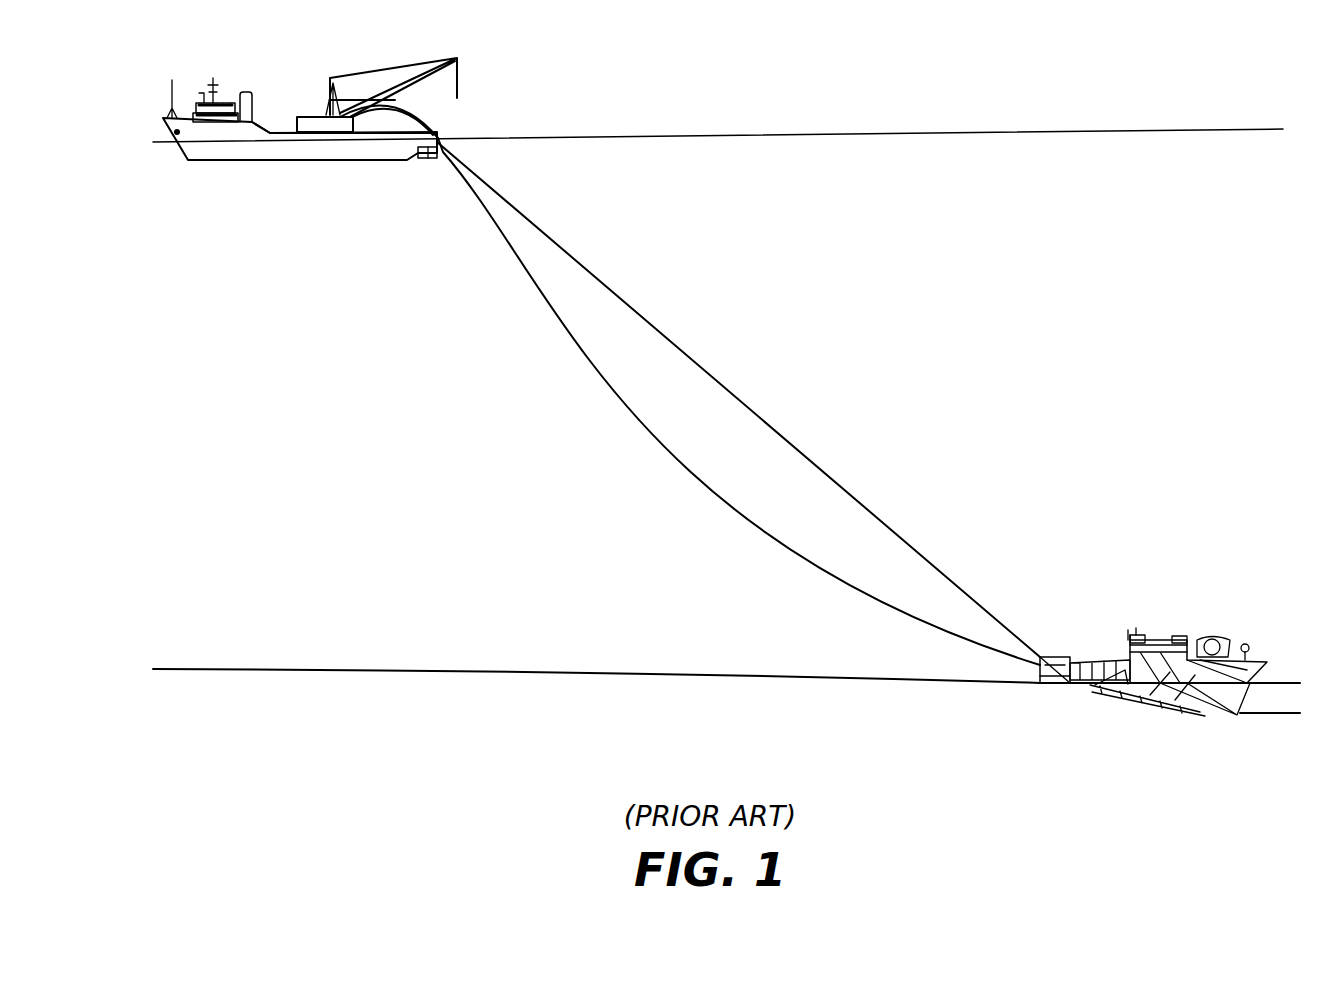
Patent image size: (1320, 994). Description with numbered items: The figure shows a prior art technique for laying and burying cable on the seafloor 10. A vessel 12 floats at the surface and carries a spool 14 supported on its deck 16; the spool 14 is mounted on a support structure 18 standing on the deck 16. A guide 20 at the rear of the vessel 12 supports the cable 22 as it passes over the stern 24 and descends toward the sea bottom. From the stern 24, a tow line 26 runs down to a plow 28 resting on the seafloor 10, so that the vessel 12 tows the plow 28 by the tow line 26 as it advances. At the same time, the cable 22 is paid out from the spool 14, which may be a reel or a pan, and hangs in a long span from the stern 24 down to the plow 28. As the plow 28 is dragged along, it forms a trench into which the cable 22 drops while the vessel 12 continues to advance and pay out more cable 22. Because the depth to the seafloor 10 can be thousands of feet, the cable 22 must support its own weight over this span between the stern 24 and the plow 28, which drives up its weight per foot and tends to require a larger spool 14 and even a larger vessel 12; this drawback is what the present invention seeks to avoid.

The seafloor 10 is at (272, 669).
The vessel 12 is at (273, 163).
The spool 14 is at (325, 115).
The deck 16 is at (273, 132).
The support structure 18 is at (323, 127).
The guide 20 is at (420, 112).
The cable 22 is at (587, 360).
The stern 24 is at (435, 163).
The tow line 26 is at (647, 320).
The plow 28 is at (1103, 640).